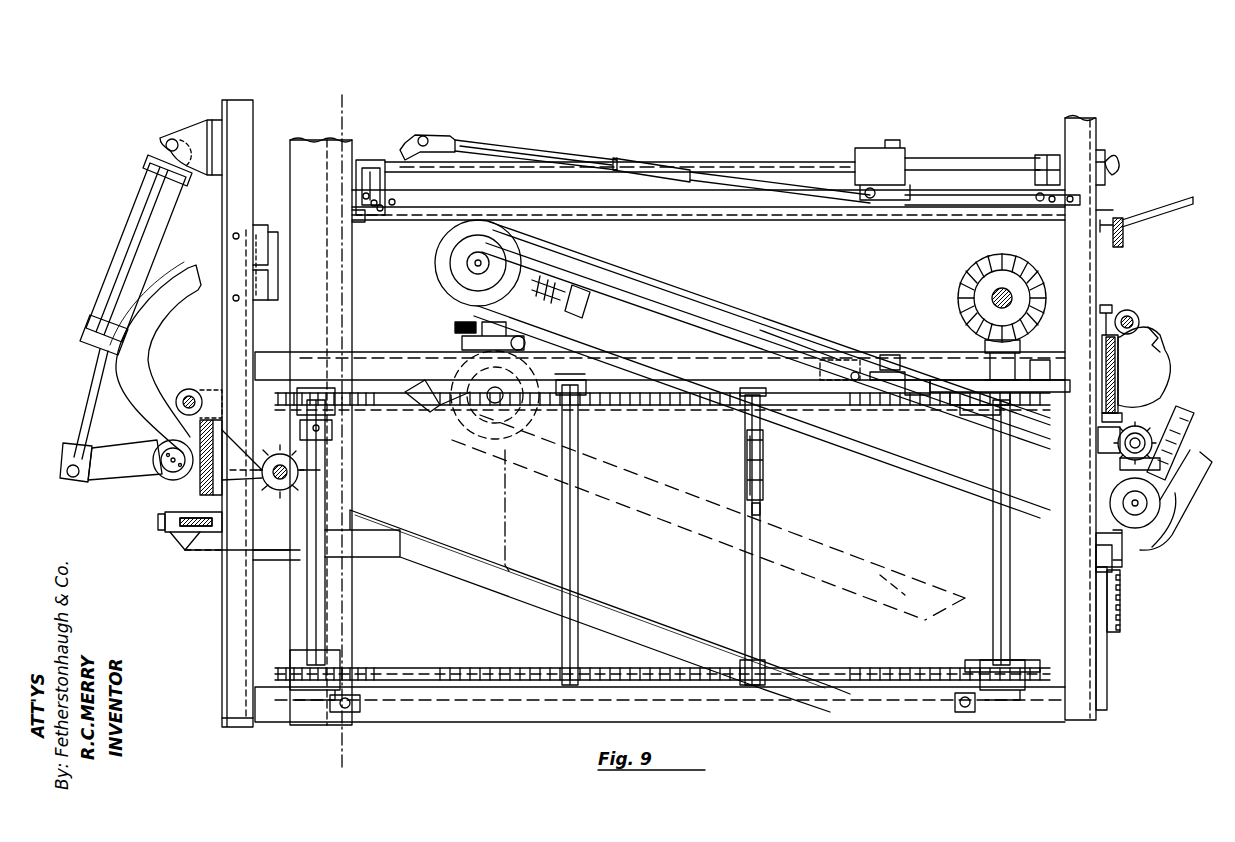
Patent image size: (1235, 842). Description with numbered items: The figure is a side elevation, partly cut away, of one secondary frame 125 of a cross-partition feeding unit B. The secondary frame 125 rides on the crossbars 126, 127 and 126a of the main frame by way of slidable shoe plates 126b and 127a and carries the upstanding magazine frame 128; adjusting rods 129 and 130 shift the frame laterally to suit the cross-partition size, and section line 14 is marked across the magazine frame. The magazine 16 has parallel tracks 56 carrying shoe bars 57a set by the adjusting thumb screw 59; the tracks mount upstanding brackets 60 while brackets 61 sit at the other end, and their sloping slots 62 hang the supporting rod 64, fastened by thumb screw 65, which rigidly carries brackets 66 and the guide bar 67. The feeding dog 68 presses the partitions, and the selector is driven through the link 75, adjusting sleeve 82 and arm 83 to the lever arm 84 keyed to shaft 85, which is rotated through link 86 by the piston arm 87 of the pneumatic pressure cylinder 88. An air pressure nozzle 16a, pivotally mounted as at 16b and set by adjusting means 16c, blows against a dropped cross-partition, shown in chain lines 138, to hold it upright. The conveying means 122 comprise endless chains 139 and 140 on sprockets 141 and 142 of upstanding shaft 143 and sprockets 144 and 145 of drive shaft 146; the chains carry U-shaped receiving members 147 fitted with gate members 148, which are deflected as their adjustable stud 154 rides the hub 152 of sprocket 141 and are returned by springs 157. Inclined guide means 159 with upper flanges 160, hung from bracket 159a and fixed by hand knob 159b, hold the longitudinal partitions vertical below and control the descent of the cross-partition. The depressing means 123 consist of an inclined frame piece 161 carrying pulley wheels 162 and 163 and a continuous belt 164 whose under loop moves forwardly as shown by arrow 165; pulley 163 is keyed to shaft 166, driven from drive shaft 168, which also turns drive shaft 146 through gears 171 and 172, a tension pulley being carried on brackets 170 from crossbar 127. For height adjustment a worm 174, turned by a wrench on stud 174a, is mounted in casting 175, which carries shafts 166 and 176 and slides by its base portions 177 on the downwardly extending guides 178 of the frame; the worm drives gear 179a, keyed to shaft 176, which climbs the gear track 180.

The section line 14- 14 is at (342, 97).
The magazine 16 is at (757, 150).
The air pressure nozzle 16a is at (425, 410).
The pivotal mounting of nozzle 16b is at (530, 355).
The adjusting means 16c is at (452, 328).
The tracks 56 is at (740, 222).
The shoe bars 57a is at (383, 228).
The adjusting thumb screw 59 is at (1118, 215).
The upstanding brackets 60 is at (1068, 130).
The brackets 61 is at (360, 155).
The downwardly sloping slot 62 is at (1103, 150).
The supporting rod 64 is at (818, 165).
The thumb screw 65 is at (1118, 170).
The brackets 66 is at (1045, 155).
The guide bar 67 is at (952, 190).
The feeding dog 68 is at (880, 150).
The link 75 is at (705, 172).
The adjusting sleeve 82 is at (640, 158).
The arm 83 is at (570, 155).
The lever arm 84 is at (165, 330).
The shaft 85 is at (158, 452).
The link 86 is at (118, 480).
The piston arm 87 is at (90, 440).
The double-acting pneumatic pressure cylinder 88 is at (155, 215).
The conveying means 122 is at (735, 550).
The depressing means 123 is at (702, 298).
The secondary frame 125 is at (238, 626).
The crossbar 126 is at (200, 485).
The crossbar 126a is at (190, 558).
The slidable shoe plate 126b is at (162, 522).
The crossbar 127 is at (1122, 372).
The slidable shoe plate 127a is at (1112, 318).
The upstanding magazine frame 128 is at (330, 160).
The adjusting rod 129 is at (192, 386).
The adjusting rod 130 is at (1135, 311).
The cross-partition (chain lines) 138 is at (505, 487).
The endless chain 139 is at (642, 410).
The endless chain 140 is at (655, 660).
The sprocket 141 is at (345, 405).
The sprocket 142 is at (340, 665).
The upstanding shaft 143 is at (325, 594).
The sprocket 144 is at (945, 420).
The sprocket 145 is at (985, 668).
The upstanding drive shaft 146 is at (990, 568).
The cross-partition receiving member 147 is at (762, 598).
The gate member 148 is at (560, 490).
The hub 152 is at (332, 440).
The adjustable stud 154 is at (556, 425).
The springs 157 is at (765, 450).
The inclined guide means 159 is at (454, 567).
The bracket 159a is at (290, 560).
The hand knob 159b is at (165, 542).
The upper flanges 160 is at (470, 532).
The inclined frame piece 161 is at (628, 292).
The pulley wheel 162 is at (455, 280).
The pulley wheel 163 is at (1110, 535).
The continuous belt 164 is at (782, 300).
The arrow 165 is at (880, 472).
The shaft 166 is at (1150, 542).
The drive shaft 168 is at (992, 300).
The brackets 170 is at (1165, 340).
The gear 171 is at (960, 270).
The gear 172 is at (985, 338).
The manually actuable worm 174 is at (1118, 470).
The stud 174a is at (1192, 392).
The casting 175 is at (1110, 497).
The shaft 176 is at (1118, 450).
The base portions 177 is at (1096, 558).
The downwardly extending guides 178 is at (1074, 636).
The gear 179a is at (1182, 355).
The gear track 180 is at (1122, 600).